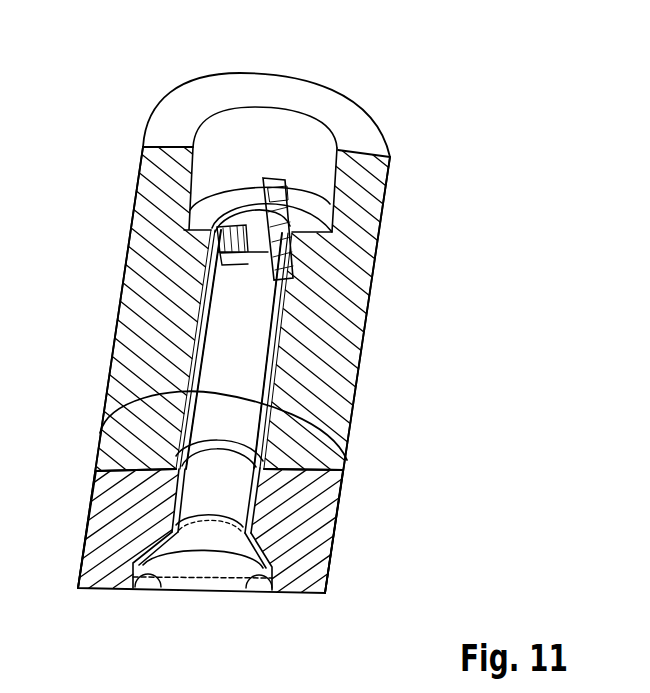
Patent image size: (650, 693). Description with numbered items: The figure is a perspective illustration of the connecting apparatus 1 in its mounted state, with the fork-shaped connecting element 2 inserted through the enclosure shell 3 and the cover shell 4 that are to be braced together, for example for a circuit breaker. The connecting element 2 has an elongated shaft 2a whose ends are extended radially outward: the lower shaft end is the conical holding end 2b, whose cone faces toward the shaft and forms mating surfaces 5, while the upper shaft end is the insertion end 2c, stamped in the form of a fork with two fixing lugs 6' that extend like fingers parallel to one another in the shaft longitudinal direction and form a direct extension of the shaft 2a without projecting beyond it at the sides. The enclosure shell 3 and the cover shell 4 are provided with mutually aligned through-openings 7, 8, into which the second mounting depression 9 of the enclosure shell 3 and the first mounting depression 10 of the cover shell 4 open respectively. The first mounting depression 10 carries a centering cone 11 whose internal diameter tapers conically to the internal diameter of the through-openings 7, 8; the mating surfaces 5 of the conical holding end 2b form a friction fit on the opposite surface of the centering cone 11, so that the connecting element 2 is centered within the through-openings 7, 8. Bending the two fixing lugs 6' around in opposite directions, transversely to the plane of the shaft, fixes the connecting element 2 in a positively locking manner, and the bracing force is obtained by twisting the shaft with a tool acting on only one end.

The connecting apparatus 1 is at (487, 307).
The connecting element 2 is at (197, 313).
The shaft 2a is at (230, 353).
The holding end 2b is at (205, 583).
The insertion end 2c is at (278, 178).
The enclosure shell 3 is at (153, 255).
The cover shell 4 is at (303, 540).
The mating surfaces 5 is at (165, 587).
The fixing lugs 6' is at (320, 224).
The through-opening 7 is at (273, 366).
The through-opening 8 is at (173, 493).
The second mounting depression 9 is at (241, 152).
The first mounting depression 10 is at (137, 587).
The centering cone 11 is at (142, 556).